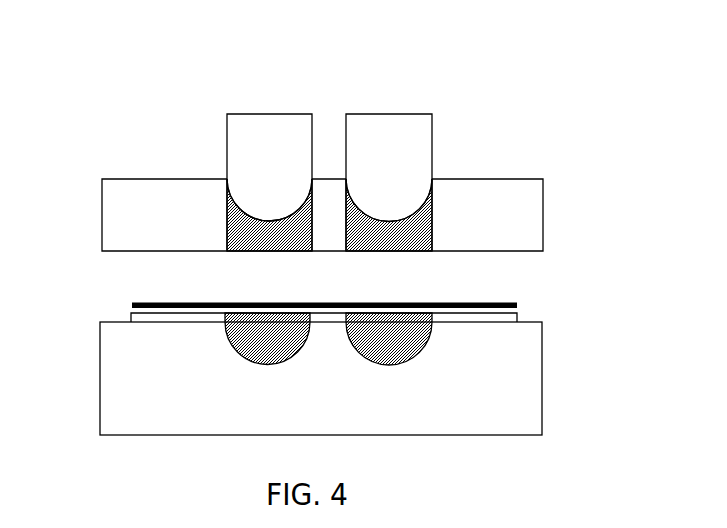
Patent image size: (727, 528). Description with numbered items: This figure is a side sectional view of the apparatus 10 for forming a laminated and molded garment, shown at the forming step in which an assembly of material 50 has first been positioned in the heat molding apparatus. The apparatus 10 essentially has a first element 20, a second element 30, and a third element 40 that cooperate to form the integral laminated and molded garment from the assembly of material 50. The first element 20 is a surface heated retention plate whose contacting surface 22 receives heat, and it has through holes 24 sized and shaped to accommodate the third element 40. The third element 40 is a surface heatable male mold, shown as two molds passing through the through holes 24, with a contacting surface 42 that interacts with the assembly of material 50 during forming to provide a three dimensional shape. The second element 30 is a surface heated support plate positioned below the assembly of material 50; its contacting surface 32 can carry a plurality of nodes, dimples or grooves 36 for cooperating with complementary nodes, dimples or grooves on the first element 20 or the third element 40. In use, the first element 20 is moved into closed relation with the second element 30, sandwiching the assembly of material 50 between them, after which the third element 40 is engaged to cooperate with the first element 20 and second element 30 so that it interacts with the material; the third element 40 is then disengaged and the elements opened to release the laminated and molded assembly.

The apparatus 10 is at (110, 112).
The first element 20 is at (505, 212).
The contacting surface 22 is at (165, 252).
The through holes 24 is at (247, 252).
The second element 30 is at (490, 378).
The contacting surface 32 is at (108, 320).
The nodes, dimples or grooves 36 is at (305, 345).
The third element 40 is at (389, 155).
The contacting surface 42 is at (248, 212).
The assembly of material 50 is at (148, 302).